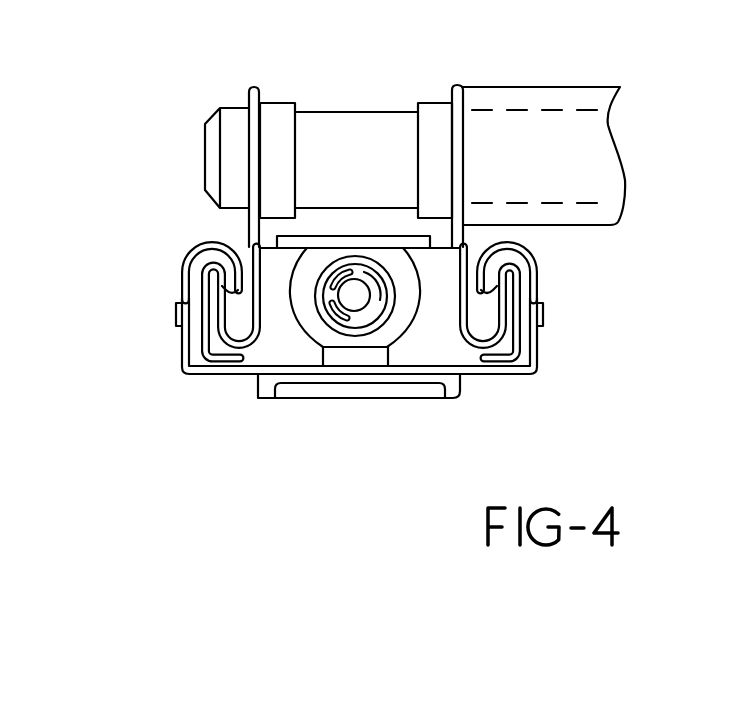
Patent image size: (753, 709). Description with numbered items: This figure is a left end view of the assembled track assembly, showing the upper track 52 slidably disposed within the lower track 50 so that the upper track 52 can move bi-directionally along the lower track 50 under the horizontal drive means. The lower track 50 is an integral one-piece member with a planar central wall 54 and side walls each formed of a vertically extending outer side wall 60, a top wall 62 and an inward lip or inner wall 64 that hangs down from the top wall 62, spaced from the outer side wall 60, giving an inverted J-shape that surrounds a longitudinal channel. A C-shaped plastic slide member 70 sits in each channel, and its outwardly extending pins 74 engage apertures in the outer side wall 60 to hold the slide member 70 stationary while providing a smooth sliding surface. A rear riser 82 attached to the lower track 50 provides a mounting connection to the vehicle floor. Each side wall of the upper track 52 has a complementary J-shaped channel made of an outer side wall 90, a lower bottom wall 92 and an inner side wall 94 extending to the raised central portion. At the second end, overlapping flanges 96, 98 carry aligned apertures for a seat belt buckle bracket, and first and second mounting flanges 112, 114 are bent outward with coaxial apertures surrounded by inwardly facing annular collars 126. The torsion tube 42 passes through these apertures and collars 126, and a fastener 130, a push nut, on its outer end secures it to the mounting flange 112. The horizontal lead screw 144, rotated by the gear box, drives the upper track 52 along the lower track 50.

The torsion tube 42 is at (360, 125).
The lower track 50 is at (212, 383).
The upper track 52 is at (248, 244).
The central wall 54 is at (268, 373).
The outer side wall 60 is at (183, 259).
The top wall 62 is at (200, 238).
The inner wall 64 is at (210, 284).
The slide member 70 is at (184, 305).
The pins 74 is at (182, 327).
The rear riser 82 is at (333, 392).
The outer side wall 90 is at (218, 332).
The lower bottom wall 92 is at (222, 348).
The inner side wall 94 is at (276, 316).
The overlapping flange 96 is at (365, 237).
The overlapping flange 98 is at (420, 250).
The first mounting flange 112 is at (254, 85).
The second mounting flange 114 is at (458, 85).
The annular collars 126 is at (276, 125).
The fastener 130 is at (247, 103).
The horizontal lead screw 144 is at (360, 304).